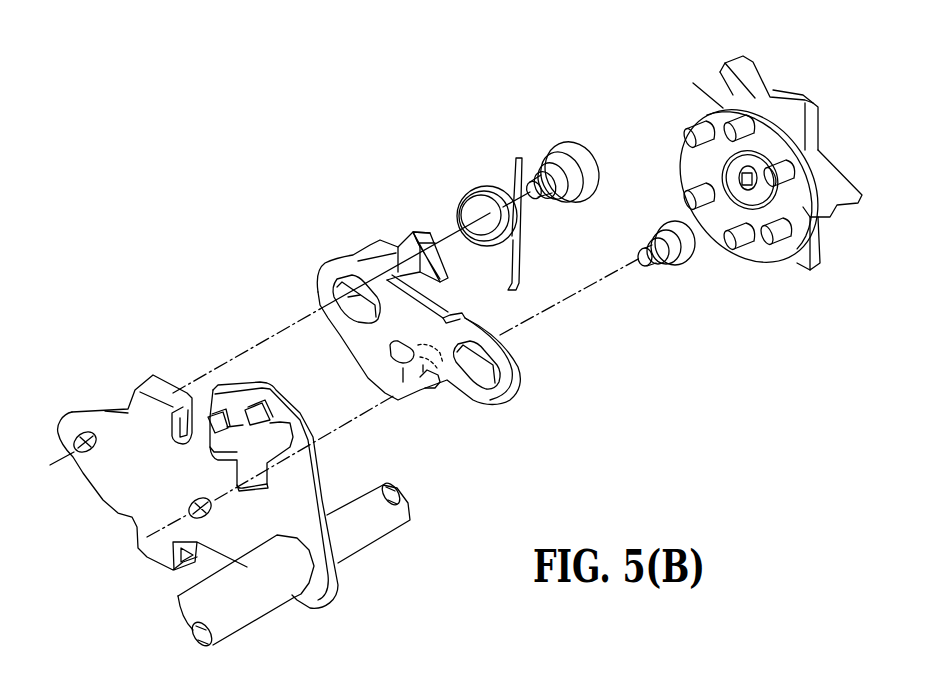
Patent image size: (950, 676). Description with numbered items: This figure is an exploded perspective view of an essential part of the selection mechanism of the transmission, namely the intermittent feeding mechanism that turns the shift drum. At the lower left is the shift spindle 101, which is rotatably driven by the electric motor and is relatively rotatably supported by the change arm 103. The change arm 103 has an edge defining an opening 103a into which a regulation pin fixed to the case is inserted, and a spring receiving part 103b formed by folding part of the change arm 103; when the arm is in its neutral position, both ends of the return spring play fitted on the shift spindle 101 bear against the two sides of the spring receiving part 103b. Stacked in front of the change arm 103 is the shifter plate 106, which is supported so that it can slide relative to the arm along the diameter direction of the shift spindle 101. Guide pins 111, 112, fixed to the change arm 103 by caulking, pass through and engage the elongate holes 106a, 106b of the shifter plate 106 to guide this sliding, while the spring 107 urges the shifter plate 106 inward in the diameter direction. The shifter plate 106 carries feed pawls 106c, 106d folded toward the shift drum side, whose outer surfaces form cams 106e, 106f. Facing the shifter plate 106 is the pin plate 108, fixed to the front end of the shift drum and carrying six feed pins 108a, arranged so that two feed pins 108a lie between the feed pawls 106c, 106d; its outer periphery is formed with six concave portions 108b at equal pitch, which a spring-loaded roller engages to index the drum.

The shift spindle 101 is at (370, 535).
The change arm 103 is at (135, 483).
The opening 103a is at (257, 445).
The spring receiving part 103b is at (255, 407).
The shifter plate 106 is at (353, 332).
The elongate hole 106a is at (358, 296).
The elongate hole 106b is at (487, 362).
The feed pawl 106c is at (413, 233).
The feed pawl 106d is at (423, 385).
The cam 106e is at (425, 230).
The cam 106f is at (443, 383).
The spring 107 is at (484, 184).
The pin plate 108 is at (781, 70).
The feed pins 108a is at (700, 122).
The concave portions 108b is at (833, 157).
The guide pin 111 is at (583, 153).
The guide pin 112 is at (693, 260).